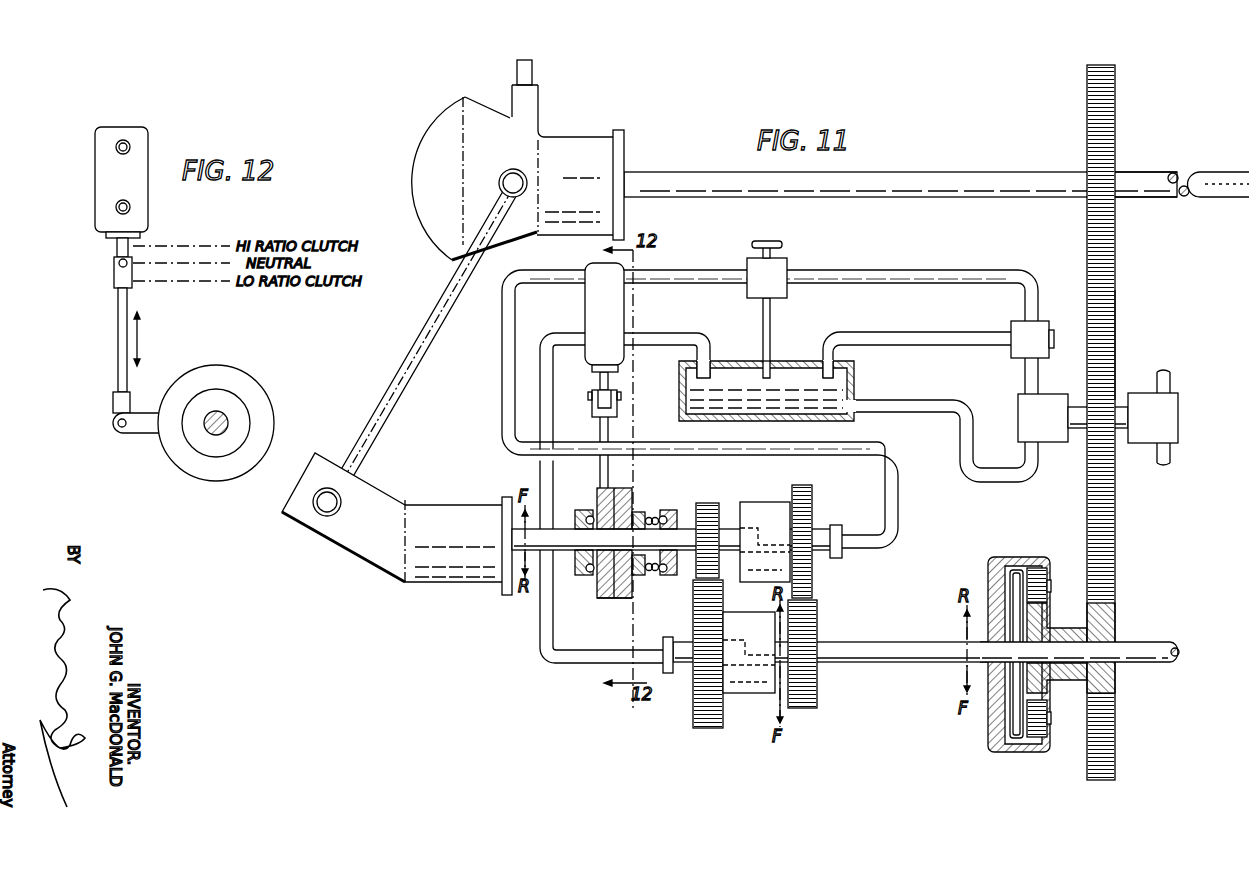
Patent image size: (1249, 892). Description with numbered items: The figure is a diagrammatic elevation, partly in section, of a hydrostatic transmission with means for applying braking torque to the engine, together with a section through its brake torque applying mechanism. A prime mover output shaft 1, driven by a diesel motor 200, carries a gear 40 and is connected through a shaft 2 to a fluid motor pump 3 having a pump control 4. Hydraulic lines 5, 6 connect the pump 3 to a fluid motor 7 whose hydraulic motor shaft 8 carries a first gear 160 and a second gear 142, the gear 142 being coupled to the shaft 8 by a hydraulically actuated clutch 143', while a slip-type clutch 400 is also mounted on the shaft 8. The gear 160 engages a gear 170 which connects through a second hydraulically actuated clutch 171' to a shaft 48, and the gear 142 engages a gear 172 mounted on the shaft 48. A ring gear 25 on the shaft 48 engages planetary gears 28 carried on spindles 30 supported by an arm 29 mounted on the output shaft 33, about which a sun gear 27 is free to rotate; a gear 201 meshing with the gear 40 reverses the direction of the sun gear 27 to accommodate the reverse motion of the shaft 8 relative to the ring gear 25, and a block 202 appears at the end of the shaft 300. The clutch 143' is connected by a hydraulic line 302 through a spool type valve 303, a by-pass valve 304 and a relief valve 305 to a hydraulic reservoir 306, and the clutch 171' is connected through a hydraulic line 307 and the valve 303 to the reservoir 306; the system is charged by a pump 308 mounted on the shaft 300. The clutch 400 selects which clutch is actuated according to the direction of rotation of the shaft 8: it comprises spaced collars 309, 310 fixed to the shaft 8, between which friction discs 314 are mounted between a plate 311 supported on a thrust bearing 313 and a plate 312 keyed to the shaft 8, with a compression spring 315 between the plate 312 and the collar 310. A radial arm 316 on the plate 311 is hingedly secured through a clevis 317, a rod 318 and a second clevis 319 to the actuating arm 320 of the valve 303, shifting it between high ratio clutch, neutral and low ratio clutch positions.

In FIG. 11, the prime mover output shaft 1 is at (1138, 178).
In FIG. 11, the shaft 2 is at (1005, 180).
In FIG. 11, the fluid motor pump 3 is at (557, 143).
In FIG. 11, the pump control 4 is at (527, 76).
In FIG. 11, the hydraulic line 5 is at (424, 340).
In FIG. 11, the hydraulic line 6 is at (408, 350).
In FIG. 11, the fluid motor 7 is at (355, 540).
In FIG. 11, the hydraulic motor shaft 8 is at (559, 552).
In FIG. 11, the ring gear 25 is at (1038, 562).
In FIG. 11, the sun gear 27 is at (1035, 623).
In FIG. 11, the planetary gears 28 is at (1048, 720).
In FIG. 11, the arm 29 is at (1015, 577).
In FIG. 11, the spindles 30 is at (1048, 587).
In FIG. 11, the output shaft 33 is at (1143, 647).
In FIG. 11, the gear 40 is at (1115, 235).
In FIG. 11, the shaft 48 is at (905, 662).
In FIG. 11, the second gear 142 is at (807, 503).
In FIG. 11, the hydraulically actuated clutch 143' is at (767, 520).
In FIG. 11, the first gear 160 is at (705, 507).
In FIG. 11, the gear 170 is at (693, 723).
In FIG. 11, the second hydraulically actuated clutch 171' is at (749, 677).
In FIG. 11, the gear 172 is at (807, 698).
In FIG. 11, the diesel motor 200 is at (1200, 180).
In FIG. 11, the gear 201 is at (1102, 337).
In FIG. 11, the bearing block 202 is at (1167, 410).
In FIG. 11, the shaft 300 is at (1120, 407).
In FIG. 11, the hydraulic line 302 is at (668, 272).
In FIG. 12, the hydraulic line 302 is at (130, 145).
In FIG. 11, the spool type valve 303 is at (613, 312).
In FIG. 12, the spool type valve 303 is at (108, 187).
In FIG. 11, the by-pass valve 304 is at (773, 287).
In FIG. 11, the relief valve 305 is at (1012, 318).
In FIG. 11, the hydraulic reservoir 306 is at (854, 380).
In FIG. 11, the hydraulic line 307 is at (702, 347).
In FIG. 12, the hydraulic line 307 is at (132, 208).
In FIG. 11, the pump 308 is at (1047, 435).
In FIG. 11, the collar 309 is at (583, 577).
In FIG. 11, the collar 310 is at (668, 577).
In FIG. 11, the plate 311 is at (597, 492).
In FIG. 12, the plate 311 is at (247, 385).
In FIG. 11, the plate 312 is at (638, 598).
In FIG. 11, the thrust bearing 313 is at (593, 572).
In FIG. 11, the friction discs 314 is at (615, 600).
In FIG. 11, the compression spring 315 is at (652, 572).
In FIG. 12, the radial arm 316 is at (138, 425).
In FIG. 12, the clevis 317 is at (118, 402).
In FIG. 11, the rod 318 is at (608, 468).
In FIG. 12, the rod 318 is at (120, 339).
In FIG. 11, the second clevis 319 is at (620, 410).
In FIG. 12, the second clevis 319 is at (117, 278).
In FIG. 11, the actuating arm 320 is at (783, 243).
In FIG. 12, the actuating arm 320 is at (118, 248).
In FIG. 11, the slip-type clutch 400 is at (633, 497).